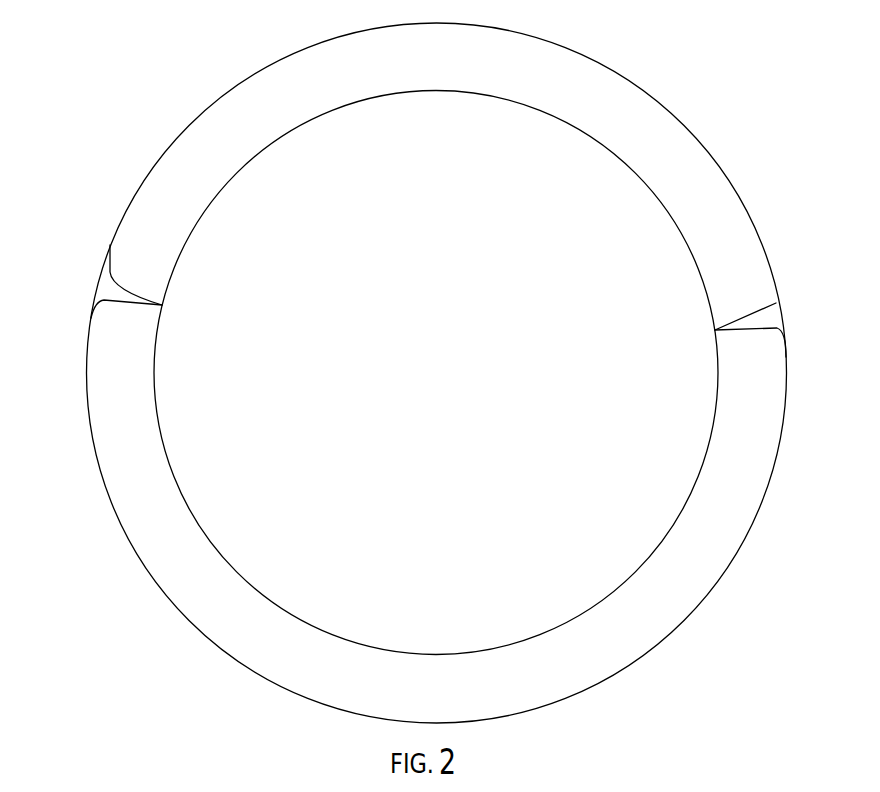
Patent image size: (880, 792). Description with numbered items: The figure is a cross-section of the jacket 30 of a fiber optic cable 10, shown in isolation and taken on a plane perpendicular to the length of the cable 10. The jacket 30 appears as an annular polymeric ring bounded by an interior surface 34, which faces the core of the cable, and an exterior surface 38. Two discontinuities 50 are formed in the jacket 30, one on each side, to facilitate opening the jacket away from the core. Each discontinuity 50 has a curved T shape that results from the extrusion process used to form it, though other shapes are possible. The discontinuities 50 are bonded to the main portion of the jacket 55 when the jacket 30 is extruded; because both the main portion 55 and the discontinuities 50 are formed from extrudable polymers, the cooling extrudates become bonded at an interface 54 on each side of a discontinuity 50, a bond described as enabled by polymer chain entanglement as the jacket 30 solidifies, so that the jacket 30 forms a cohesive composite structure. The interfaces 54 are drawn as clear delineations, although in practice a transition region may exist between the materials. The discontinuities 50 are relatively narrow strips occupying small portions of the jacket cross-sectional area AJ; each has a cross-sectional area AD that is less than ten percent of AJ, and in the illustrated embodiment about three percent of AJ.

The fiber optic cable 10 is at (118, 160).
The jacket 30 is at (752, 548).
The interior surface 34 is at (592, 140).
The exterior surface 38 is at (213, 102).
The discontinuities 50 is at (98, 282).
The interface 54 is at (753, 310).
The main portion of the jacket 55 is at (717, 193).
The cross-sectional area of a discontinuity AD is at (127, 290).
The jacket cross-sectional area AJ is at (307, 640).